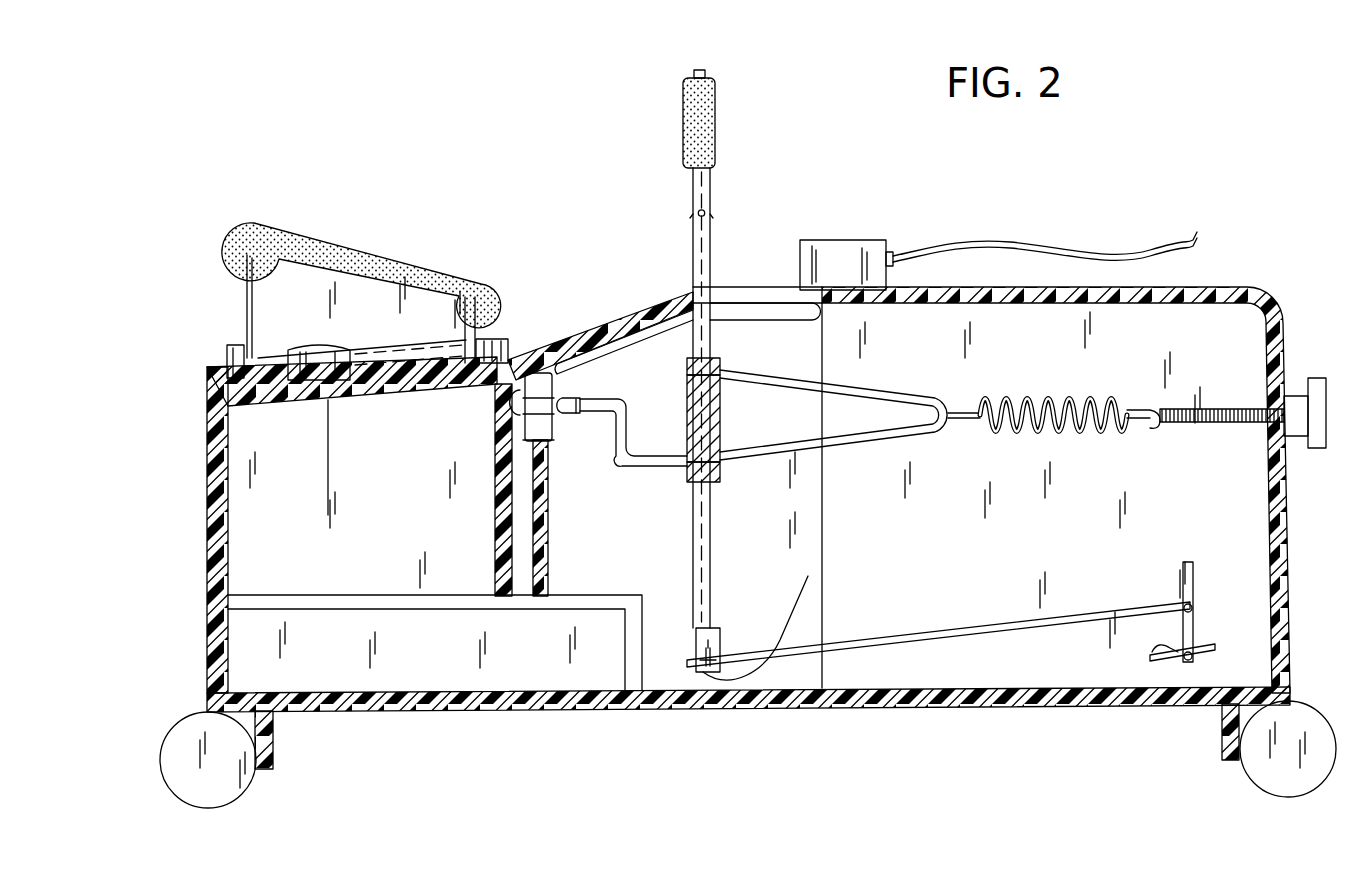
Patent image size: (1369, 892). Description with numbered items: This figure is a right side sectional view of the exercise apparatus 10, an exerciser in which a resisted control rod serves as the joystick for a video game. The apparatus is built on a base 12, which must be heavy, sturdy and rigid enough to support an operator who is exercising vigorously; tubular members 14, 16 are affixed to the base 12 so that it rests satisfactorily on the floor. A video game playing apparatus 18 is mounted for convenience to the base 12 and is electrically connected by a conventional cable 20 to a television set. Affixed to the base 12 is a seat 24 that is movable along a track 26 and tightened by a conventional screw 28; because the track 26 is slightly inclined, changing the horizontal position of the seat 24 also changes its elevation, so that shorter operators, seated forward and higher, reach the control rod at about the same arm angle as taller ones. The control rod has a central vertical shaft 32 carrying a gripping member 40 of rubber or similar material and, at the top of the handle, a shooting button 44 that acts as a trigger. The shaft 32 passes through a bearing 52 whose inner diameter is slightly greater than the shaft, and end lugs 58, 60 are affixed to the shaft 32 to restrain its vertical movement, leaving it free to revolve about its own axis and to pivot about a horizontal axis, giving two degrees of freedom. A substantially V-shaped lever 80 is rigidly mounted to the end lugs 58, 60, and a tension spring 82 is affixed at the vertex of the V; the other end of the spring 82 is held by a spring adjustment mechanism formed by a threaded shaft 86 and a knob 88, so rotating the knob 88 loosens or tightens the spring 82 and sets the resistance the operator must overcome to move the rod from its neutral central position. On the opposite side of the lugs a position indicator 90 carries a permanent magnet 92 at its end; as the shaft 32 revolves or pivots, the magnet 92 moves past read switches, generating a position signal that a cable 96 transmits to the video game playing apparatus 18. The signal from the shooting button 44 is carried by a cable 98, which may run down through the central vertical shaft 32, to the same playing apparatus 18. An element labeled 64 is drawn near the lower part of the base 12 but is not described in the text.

The exercise apparatus 10 is at (792, 200).
The base 12 is at (618, 727).
The tubular member 14 is at (190, 723).
The tubular member 16 is at (1250, 763).
The video game playing apparatus 18 is at (838, 246).
The cable 20 is at (948, 243).
The seat 24 is at (240, 304).
The track 26 is at (502, 340).
The screw 28 is at (228, 349).
The central vertical shaft 32 is at (710, 244).
The gripping member 40 is at (685, 130).
The shooting button 44 is at (698, 68).
The bearing 52 is at (688, 426).
The end lug 58 is at (688, 370).
The end lug 60 is at (722, 477).
The pedal lever 64 is at (860, 632).
The V-shaped lever 80 is at (812, 377).
The tension spring 82 is at (985, 404).
The threaded shaft 86 is at (1212, 421).
The knob 88 is at (1290, 389).
The position indicator 90 is at (640, 460).
The permanent magnet 92 is at (580, 413).
The cable 96 is at (762, 318).
The cable 98 is at (808, 576).